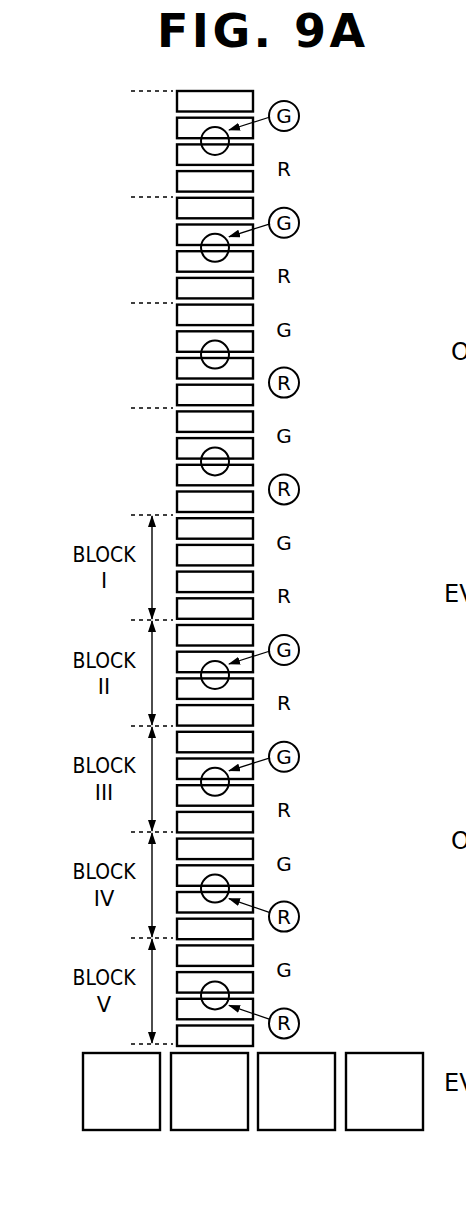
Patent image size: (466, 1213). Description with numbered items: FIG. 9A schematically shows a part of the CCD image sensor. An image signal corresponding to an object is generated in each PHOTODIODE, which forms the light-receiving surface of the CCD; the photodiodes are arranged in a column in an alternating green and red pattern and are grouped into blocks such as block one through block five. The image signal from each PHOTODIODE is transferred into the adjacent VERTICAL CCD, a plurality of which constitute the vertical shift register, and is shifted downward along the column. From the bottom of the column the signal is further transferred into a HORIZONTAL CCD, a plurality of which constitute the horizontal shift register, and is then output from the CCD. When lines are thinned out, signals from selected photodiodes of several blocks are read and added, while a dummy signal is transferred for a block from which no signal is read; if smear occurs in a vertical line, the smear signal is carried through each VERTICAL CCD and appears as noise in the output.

The vertical CCD VERTICAL CCD is at (172, 141).
The photodiode PHOTODIODE is at (300, 127).
The horizontal CCD HORIZONTAL CCD is at (253, 1115).